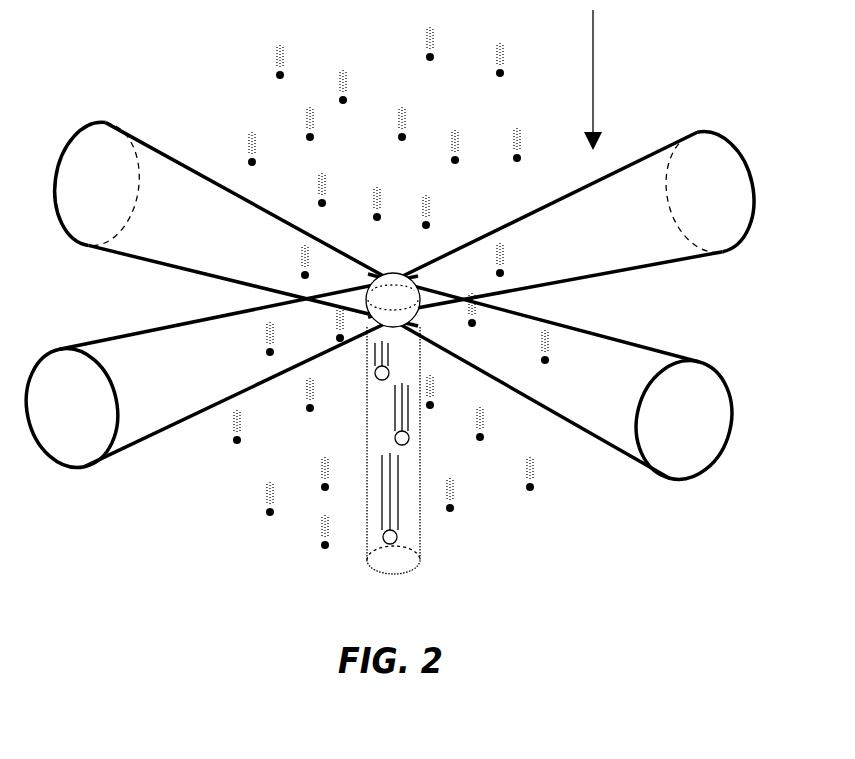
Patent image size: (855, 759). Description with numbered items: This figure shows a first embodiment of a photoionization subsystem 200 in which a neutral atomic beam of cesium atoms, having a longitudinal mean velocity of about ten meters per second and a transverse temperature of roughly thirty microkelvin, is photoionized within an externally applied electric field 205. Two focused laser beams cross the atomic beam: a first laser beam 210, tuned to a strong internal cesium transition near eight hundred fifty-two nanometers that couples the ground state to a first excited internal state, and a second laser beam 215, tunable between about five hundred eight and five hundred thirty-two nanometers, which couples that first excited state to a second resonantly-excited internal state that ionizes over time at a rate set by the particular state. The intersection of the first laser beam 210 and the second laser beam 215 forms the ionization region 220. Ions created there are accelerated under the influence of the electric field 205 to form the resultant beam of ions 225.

The particle focusing system 200 is at (318, 28).
The electric field 205 is at (631, 44).
The first laser beam 210 is at (556, 399).
The second laser beam 215 is at (217, 392).
The ionization region 220 is at (366, 300).
The beam of ions 225 is at (418, 586).